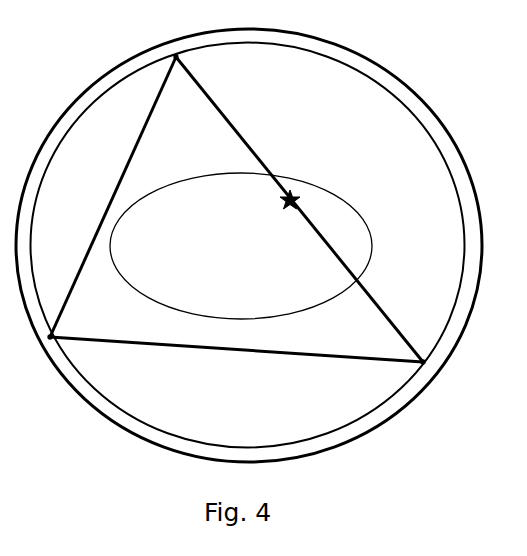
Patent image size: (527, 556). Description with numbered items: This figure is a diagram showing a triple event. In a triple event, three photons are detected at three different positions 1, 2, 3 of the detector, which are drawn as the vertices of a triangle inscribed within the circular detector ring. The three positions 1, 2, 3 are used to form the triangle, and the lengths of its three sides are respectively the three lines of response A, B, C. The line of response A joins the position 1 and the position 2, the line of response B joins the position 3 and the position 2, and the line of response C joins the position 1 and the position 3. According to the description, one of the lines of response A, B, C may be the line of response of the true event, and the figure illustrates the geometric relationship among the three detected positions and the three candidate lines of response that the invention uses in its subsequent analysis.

The position 1 is at (157, 42).
The position 2 is at (441, 383).
The position 3 is at (39, 358).
The line of response A is at (299, 209).
The line of response B is at (236, 359).
The line of response C is at (113, 197).